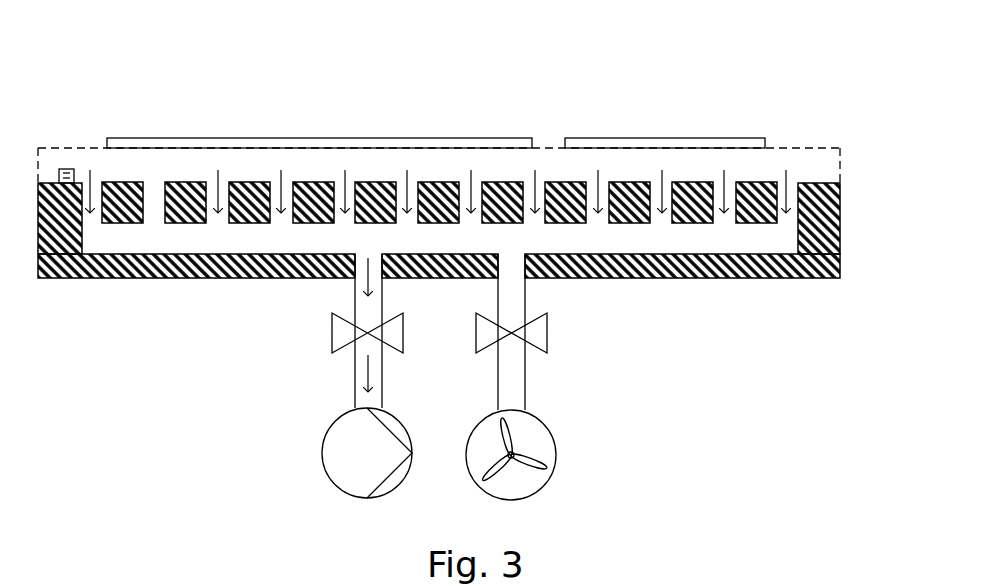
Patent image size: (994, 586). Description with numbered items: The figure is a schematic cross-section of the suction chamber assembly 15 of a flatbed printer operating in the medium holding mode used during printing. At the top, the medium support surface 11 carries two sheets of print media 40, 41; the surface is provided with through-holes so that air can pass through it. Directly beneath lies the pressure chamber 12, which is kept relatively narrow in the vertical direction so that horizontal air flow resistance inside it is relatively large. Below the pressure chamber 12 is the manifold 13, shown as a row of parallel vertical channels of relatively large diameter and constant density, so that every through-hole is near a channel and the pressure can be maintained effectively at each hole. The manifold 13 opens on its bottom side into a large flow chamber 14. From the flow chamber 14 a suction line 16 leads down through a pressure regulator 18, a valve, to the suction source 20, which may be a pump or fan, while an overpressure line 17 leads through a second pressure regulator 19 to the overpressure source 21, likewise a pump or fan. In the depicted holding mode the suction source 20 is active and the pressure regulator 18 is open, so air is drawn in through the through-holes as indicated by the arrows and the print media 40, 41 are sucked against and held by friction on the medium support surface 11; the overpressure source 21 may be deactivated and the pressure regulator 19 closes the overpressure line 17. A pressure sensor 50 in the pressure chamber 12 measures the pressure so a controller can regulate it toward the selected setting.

The medium support surface 11 is at (650, 138).
The pressure chamber 12 is at (437, 162).
The manifold 13 is at (152, 200).
The flow chamber 14 is at (152, 238).
The suction chamber assembly 15 is at (840, 213).
The suction line 16 is at (355, 300).
The overpressure line 17 is at (527, 294).
The pressure regulator 18 is at (334, 333).
The pressure regulator 19 is at (548, 333).
The suction source 20 is at (322, 453).
The overpressure source 21 is at (556, 455).
The print medium 40 is at (320, 138).
The print medium 41 is at (602, 138).
The pressure sensor 50 is at (64, 169).